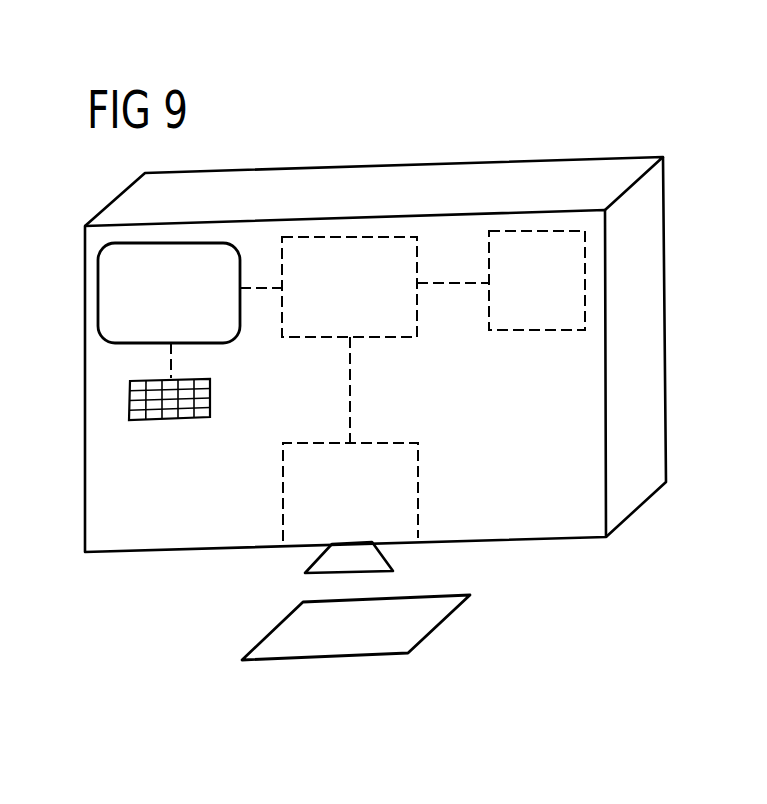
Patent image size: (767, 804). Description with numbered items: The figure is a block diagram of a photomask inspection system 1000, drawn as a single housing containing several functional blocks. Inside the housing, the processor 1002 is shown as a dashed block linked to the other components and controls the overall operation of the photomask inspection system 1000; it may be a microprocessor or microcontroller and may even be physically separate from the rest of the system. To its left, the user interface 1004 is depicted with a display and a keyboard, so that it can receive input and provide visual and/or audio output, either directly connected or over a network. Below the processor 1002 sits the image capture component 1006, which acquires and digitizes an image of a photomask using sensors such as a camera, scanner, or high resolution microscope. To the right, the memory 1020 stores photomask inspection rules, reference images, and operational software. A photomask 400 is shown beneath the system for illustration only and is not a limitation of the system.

The photomask inspection system 1000 is at (614, 97).
The processor 1002 is at (388, 328).
The user interface 1004 is at (210, 365).
The image capture component 1006 is at (410, 492).
The memory 1020 is at (541, 320).
The photomask 400 is at (355, 642).